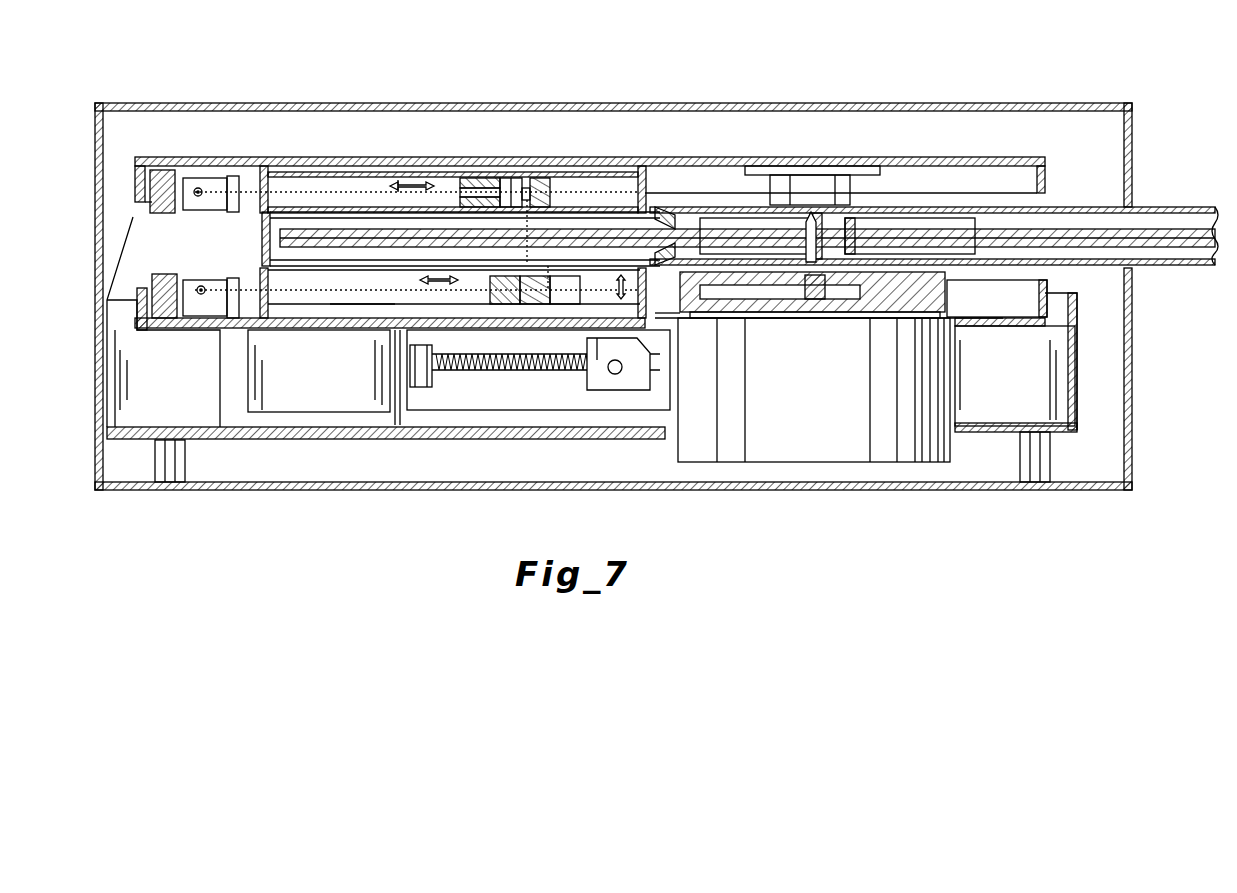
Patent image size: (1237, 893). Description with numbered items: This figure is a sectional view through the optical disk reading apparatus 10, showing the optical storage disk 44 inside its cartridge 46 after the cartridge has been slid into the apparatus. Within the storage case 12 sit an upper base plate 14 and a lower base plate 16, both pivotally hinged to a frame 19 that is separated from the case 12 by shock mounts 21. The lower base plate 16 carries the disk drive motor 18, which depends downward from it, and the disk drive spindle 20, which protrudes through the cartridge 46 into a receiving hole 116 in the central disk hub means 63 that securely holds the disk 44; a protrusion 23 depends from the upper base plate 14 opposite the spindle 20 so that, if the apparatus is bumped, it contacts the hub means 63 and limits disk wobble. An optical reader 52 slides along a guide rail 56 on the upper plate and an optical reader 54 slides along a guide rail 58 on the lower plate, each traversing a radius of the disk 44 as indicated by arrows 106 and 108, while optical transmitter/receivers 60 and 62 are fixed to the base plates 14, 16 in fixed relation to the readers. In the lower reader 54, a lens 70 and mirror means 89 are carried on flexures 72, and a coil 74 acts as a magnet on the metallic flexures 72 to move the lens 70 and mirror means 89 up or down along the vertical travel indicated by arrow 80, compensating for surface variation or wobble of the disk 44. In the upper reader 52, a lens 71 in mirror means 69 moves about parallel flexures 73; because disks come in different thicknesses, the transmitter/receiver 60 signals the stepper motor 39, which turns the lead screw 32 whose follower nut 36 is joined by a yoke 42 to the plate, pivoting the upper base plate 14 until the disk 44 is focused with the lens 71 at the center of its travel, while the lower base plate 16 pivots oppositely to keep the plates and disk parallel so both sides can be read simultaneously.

The reading apparatus 10 is at (1080, 72).
The storage case 12 is at (668, 105).
The upper base plate 14 is at (565, 158).
The lower base plate 16 is at (380, 332).
The disk drive motor 18 is at (825, 418).
The frame 19 is at (400, 440).
The disk drive spindle 20 is at (805, 215).
The shock mounts 21 is at (185, 455).
The protrusion 23 is at (750, 195).
The lead screw 32 is at (535, 345).
The follower nut 36 is at (628, 388).
The stepper motor 39 is at (340, 400).
The yoke 42 is at (597, 340).
The optical storage disk 44 is at (1182, 252).
The cartridge 46 is at (1172, 208).
The optical reader 52 is at (480, 192).
The optical reader 54 is at (535, 292).
The guide rail 56 is at (315, 190).
The guide rail 58 is at (300, 300).
The optical transmitter/receiver 60 is at (200, 188).
The optical transmitter/receiver 62 is at (205, 308).
The disk hub means 63 is at (866, 218).
The mirror means 69 is at (545, 190).
The lens 70 is at (508, 292).
The lens 71 is at (535, 207).
The flexures 72 is at (485, 286).
The parallel flexures 73 is at (503, 195).
The coil 74 is at (445, 358).
The arrow (vertical travel) 80 is at (690, 290).
The mirror means 89 is at (550, 340).
The arrow (radial movement) 106 is at (400, 185).
The arrow (radial movement) 108 is at (385, 298).
The nozzle holder 116 is at (815, 290).